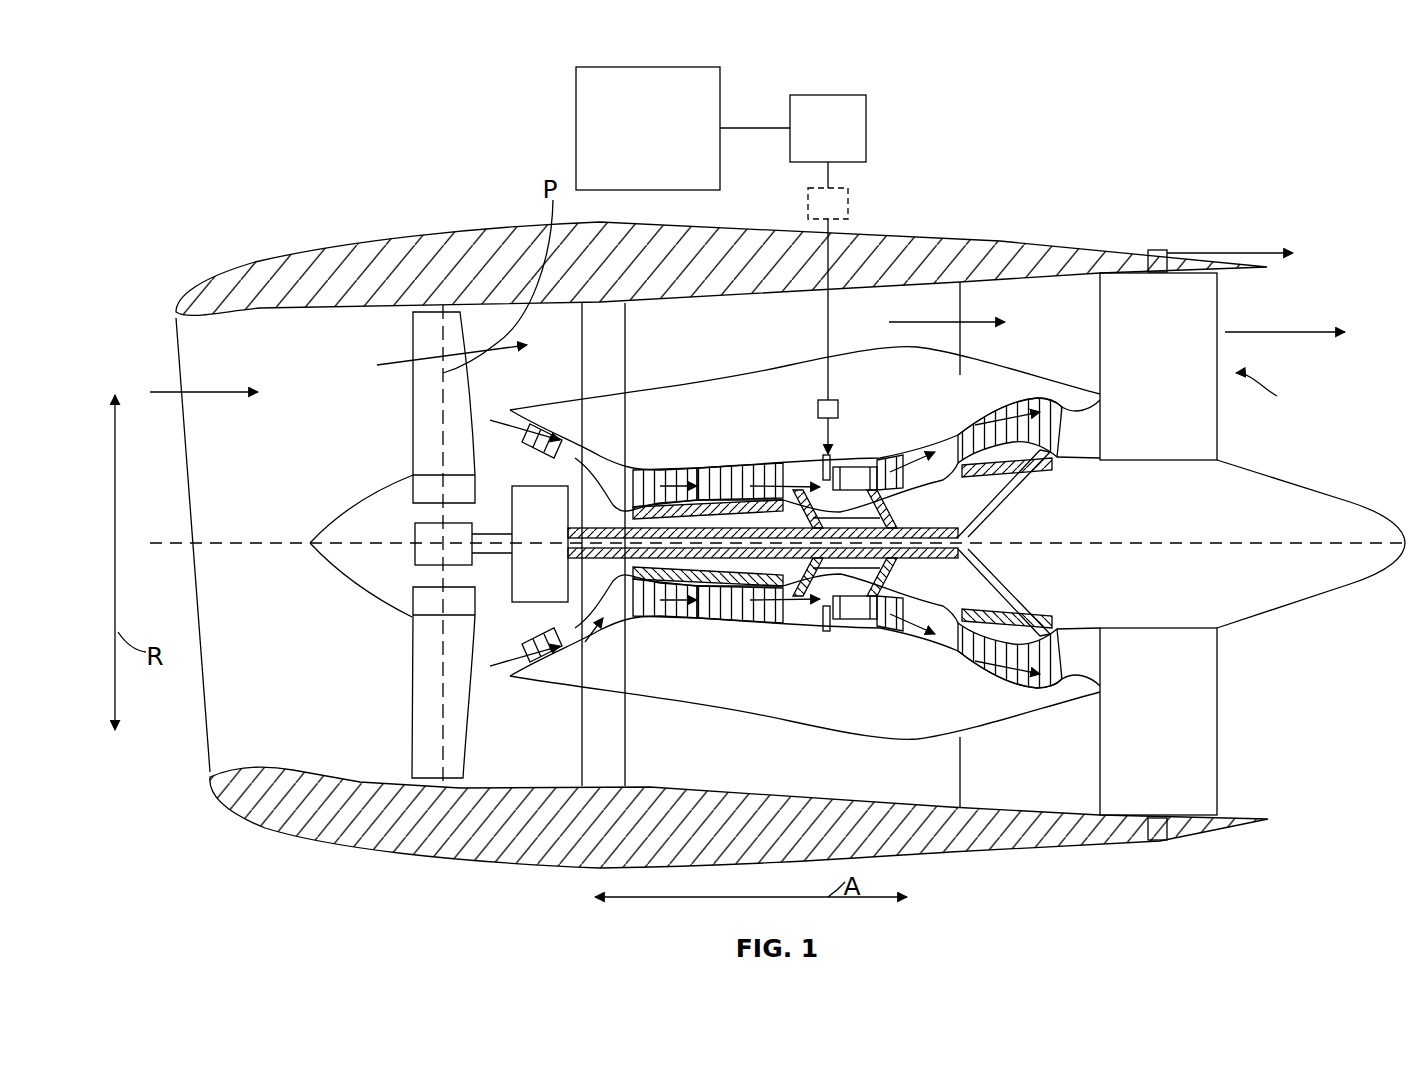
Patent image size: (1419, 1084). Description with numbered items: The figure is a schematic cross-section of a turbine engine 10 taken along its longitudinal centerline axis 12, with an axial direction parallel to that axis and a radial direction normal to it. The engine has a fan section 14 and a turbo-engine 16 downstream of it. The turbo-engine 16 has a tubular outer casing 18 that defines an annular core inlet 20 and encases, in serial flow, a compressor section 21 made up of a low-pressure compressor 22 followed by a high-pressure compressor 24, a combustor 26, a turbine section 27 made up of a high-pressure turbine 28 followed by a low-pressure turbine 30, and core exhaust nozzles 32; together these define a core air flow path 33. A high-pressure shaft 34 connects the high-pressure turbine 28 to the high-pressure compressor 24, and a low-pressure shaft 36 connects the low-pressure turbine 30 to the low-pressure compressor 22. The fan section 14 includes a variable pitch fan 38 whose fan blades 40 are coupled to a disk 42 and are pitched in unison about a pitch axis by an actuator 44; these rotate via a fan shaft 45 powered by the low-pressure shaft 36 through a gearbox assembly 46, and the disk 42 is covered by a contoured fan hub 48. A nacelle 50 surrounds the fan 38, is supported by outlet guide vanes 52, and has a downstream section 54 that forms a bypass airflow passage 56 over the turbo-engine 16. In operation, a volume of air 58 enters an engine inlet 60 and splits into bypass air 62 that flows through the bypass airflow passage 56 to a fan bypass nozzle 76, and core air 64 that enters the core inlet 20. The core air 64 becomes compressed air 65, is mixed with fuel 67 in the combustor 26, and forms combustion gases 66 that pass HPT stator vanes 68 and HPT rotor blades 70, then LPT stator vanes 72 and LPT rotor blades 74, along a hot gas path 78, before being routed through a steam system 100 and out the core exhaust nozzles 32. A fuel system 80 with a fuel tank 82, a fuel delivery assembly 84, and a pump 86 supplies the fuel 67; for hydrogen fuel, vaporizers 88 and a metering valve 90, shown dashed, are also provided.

The turbine engine 10 is at (298, 243).
The longitudinal centerline axis 12 is at (1205, 542).
The fan section 14 is at (383, 330).
The turbo-engine 16 is at (850, 390).
The outer casing 18 is at (800, 728).
The core inlet 20 is at (520, 672).
The compressor section 21 is at (705, 410).
The low-pressure compressor 22 is at (562, 612).
The high-pressure compressor 24 is at (655, 622).
The combustor 26 is at (838, 625).
The turbine section 27 is at (952, 395).
The high-pressure turbine 28 is at (912, 622).
The low-pressure turbine 30 is at (1043, 698).
The core exhaust nozzles 32 is at (1158, 250).
The core air flow path 33 is at (600, 628).
The high-pressure shaft 34 is at (822, 488).
The low-pressure shaft 36 is at (998, 500).
The fan 38 is at (300, 668).
The fan blades 40 is at (410, 688).
The disk 42 is at (410, 476).
The actuator 44 is at (413, 548).
The fan shaft 45 is at (473, 533).
The gearbox assembly 46 is at (525, 485).
The fan hub 48 is at (340, 573).
The nacelle 50 is at (430, 848).
The outlet guide vanes 52 is at (628, 362).
The downstream section 54 is at (1000, 243).
The bypass airflow passage 56 is at (713, 335).
The volume of air 58 is at (222, 386).
The engine inlet 60 is at (205, 720).
The bypass air 62 is at (395, 362).
The core air 64 is at (508, 407).
The compressed air 65 is at (678, 485).
The combustion gases 66 is at (900, 456).
The fuel 67 is at (832, 452).
The HPT stator vanes 68 is at (887, 633).
The HPT rotor blades 70 is at (890, 605).
The LPT stator vanes 72 is at (962, 662).
The LPT rotor blades 74 is at (980, 670).
The fan bypass nozzle 76 is at (1273, 393).
The hot gas path 78 is at (935, 430).
The fuel system 80 is at (563, 72).
The fuel tank 82 is at (576, 128).
The fuel delivery assembly 84 is at (832, 345).
The pump 86 is at (866, 127).
The vaporizers 88 is at (848, 205).
The metering valve 90 is at (818, 408).
The steam system 100 is at (1135, 382).